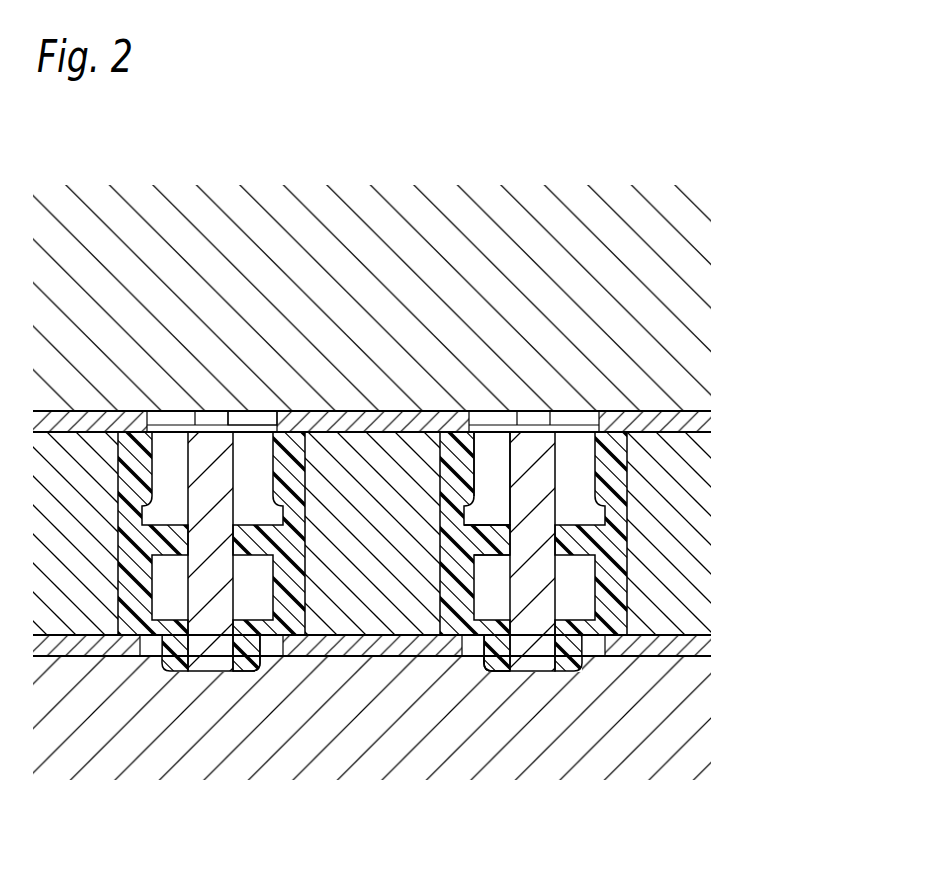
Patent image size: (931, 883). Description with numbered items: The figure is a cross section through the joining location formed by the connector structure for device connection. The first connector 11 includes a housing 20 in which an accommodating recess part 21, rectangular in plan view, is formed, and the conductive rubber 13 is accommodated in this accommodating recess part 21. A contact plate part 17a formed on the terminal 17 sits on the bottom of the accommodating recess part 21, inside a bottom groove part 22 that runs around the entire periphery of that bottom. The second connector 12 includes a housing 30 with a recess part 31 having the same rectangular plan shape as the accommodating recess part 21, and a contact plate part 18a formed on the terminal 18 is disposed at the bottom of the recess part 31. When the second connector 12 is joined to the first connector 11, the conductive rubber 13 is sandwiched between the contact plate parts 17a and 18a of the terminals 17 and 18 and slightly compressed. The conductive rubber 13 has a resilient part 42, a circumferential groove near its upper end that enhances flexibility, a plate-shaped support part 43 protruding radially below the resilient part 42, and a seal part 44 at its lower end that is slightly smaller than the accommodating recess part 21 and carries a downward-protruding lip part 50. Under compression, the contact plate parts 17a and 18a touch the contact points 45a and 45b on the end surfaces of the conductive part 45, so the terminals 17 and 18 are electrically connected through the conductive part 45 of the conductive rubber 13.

The first connector 11 is at (737, 633).
The second connector 12 is at (737, 347).
The conductive rubber 13 is at (265, 458).
The terminal 17 is at (390, 658).
The contact plate part 17a is at (413, 647).
The terminal 18 is at (390, 409).
The contact plate part 18a is at (423, 422).
The housing 20 is at (687, 728).
The accommodating recess part 21 is at (497, 432).
The bottom groove part 22 is at (230, 670).
The housing 30 is at (693, 302).
The recess part 31 is at (236, 418).
The resilient part 42 is at (513, 512).
The support part 43 is at (502, 542).
The seal part 44 is at (503, 648).
The conductive part 45 is at (317, 462).
The contact point 45a is at (337, 636).
The contact point 45b is at (348, 432).
The lip part 50 is at (500, 668).